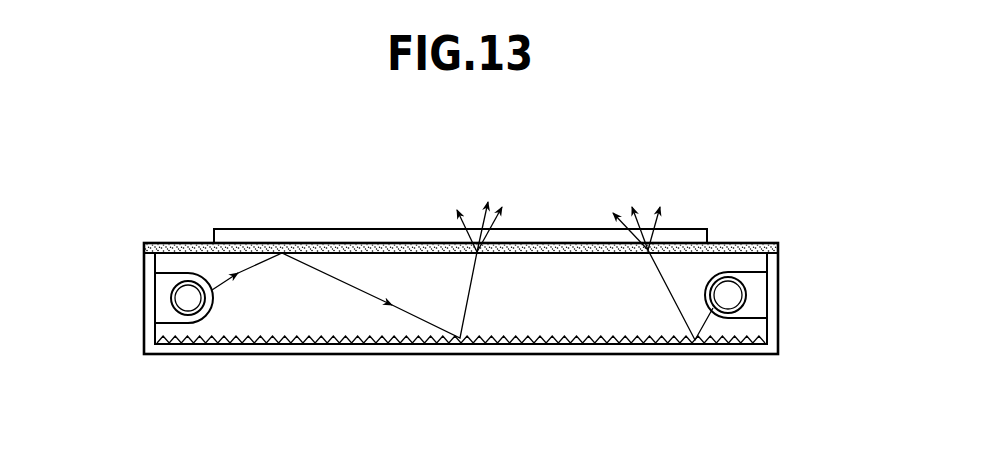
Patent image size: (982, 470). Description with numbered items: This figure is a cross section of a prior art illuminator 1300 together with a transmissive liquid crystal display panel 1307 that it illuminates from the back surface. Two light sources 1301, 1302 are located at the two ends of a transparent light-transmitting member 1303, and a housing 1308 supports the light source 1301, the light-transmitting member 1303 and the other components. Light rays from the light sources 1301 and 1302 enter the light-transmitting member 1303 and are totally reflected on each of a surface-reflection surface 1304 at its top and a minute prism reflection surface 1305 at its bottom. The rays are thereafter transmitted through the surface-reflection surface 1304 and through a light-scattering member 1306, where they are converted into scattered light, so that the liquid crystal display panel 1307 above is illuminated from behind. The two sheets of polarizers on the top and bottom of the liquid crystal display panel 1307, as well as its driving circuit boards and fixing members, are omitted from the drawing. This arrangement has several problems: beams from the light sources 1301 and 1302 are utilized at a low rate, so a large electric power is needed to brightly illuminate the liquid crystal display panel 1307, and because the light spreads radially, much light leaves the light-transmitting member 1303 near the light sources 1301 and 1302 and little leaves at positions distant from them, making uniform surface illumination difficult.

The illuminator 1300 is at (695, 354).
The light source 1301 is at (172, 300).
The light source 1302 is at (743, 292).
The light-transmitting member 1303 is at (243, 315).
The surface-reflection surface 1304 is at (346, 252).
The minute prism reflection surface 1305 is at (322, 350).
The light-scattering member 1306 is at (775, 226).
The liquid crystal display panel 1307 is at (692, 228).
The housing 1308 is at (773, 342).